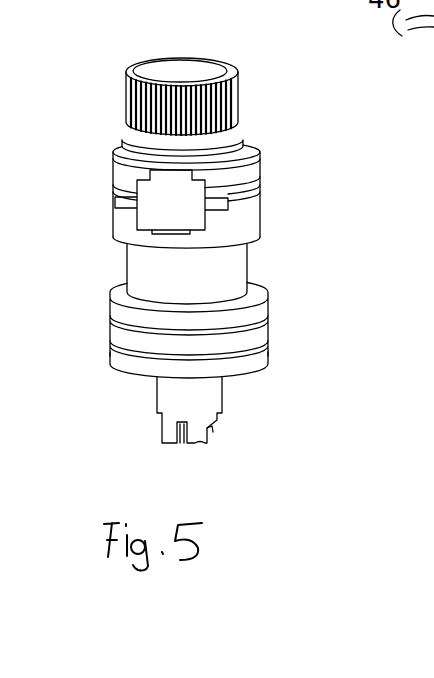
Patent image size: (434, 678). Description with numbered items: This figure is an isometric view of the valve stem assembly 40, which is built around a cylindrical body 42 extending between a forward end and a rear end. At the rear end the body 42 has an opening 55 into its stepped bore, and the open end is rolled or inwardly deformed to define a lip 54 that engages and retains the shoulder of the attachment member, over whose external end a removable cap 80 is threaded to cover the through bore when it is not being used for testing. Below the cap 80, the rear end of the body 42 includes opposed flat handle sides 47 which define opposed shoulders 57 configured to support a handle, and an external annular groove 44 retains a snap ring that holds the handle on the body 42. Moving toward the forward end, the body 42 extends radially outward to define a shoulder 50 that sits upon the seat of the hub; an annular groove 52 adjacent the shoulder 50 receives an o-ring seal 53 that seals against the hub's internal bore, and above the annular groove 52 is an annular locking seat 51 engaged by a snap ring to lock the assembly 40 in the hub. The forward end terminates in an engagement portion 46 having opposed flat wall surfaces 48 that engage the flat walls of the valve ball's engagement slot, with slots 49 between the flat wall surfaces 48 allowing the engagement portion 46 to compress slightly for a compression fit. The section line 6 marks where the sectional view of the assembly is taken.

The section line 6- 6 is at (63, 55).
The valve stem assembly 40 is at (287, 133).
The removable cap 80 is at (158, 72).
The lip 54 is at (123, 153).
The opening 55 is at (232, 147).
The external annular groove 44 is at (260, 194).
The flat handle sides 47 is at (143, 218).
The opposed shoulders 57 is at (150, 230).
The cylindrical body 42 is at (253, 268).
The annular locking seat 51 is at (257, 290).
The o-ring seal 53 is at (267, 327).
The annular groove 52 is at (110, 352).
The shoulder 50 is at (138, 377).
The engagement portion 46 is at (216, 408).
The opposed flat wall surfaces 48 is at (217, 427).
The slots 49 is at (180, 447).